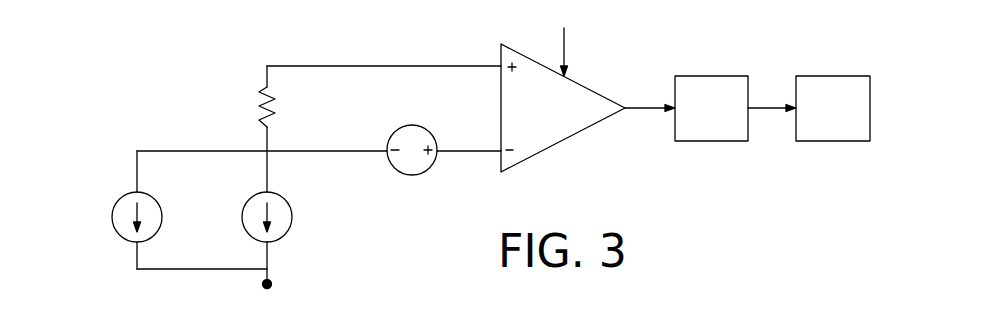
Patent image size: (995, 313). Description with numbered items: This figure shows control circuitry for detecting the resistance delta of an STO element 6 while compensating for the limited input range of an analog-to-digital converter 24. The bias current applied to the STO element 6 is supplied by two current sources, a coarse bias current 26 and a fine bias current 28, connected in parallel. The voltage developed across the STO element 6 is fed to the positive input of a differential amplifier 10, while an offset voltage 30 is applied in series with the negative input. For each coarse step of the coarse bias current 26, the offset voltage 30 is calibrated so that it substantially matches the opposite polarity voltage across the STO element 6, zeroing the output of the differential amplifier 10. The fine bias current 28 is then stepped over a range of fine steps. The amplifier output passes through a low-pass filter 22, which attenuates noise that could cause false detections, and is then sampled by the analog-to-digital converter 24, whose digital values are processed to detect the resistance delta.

The STO element 6 is at (283, 103).
The differential amplifier 10 is at (570, 137).
The low-pass filter 22 is at (712, 76).
The analog-to-digital converter 24 is at (833, 76).
The coarse bias current 26 is at (110, 245).
The fine bias current 28 is at (304, 223).
The offset voltage 30 is at (399, 121).